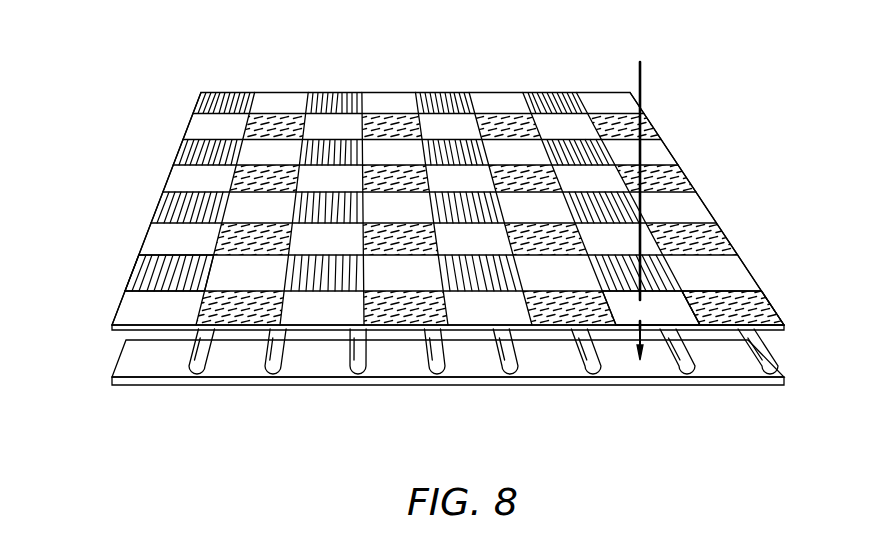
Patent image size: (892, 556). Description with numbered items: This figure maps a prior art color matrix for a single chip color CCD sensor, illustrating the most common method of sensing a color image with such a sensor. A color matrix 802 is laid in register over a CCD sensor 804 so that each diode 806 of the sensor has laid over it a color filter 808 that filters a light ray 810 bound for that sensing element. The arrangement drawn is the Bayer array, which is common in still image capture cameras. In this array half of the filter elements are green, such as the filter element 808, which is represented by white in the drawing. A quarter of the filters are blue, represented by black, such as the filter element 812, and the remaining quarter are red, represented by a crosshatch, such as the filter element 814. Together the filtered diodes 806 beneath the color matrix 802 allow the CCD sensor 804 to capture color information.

The color matrix 802 is at (400, 92).
The CCD sensor 804 is at (313, 383).
The diode 806 is at (632, 357).
The color filter 808 is at (660, 303).
The light ray 810 is at (697, 61).
The filter element 812 is at (768, 296).
The filter element 814 is at (162, 277).